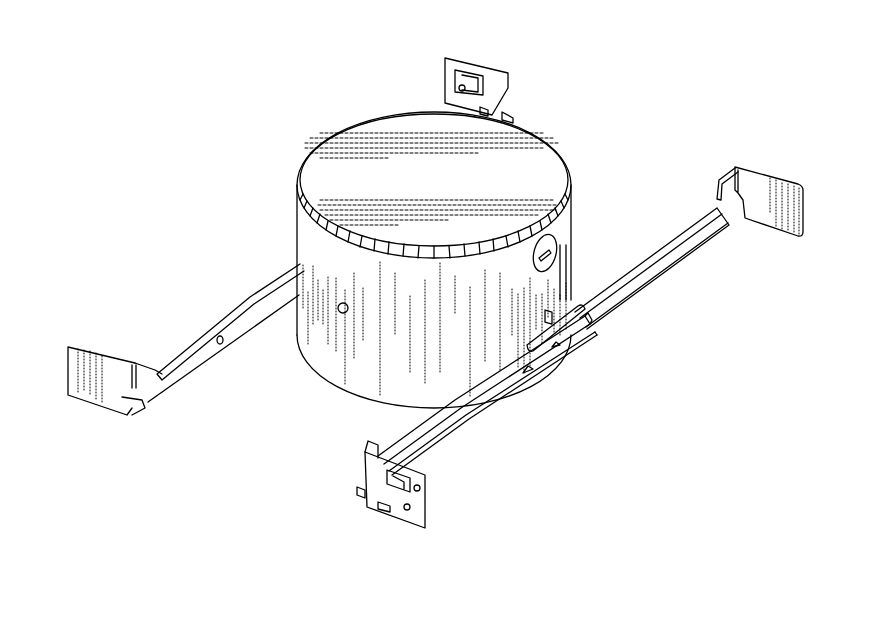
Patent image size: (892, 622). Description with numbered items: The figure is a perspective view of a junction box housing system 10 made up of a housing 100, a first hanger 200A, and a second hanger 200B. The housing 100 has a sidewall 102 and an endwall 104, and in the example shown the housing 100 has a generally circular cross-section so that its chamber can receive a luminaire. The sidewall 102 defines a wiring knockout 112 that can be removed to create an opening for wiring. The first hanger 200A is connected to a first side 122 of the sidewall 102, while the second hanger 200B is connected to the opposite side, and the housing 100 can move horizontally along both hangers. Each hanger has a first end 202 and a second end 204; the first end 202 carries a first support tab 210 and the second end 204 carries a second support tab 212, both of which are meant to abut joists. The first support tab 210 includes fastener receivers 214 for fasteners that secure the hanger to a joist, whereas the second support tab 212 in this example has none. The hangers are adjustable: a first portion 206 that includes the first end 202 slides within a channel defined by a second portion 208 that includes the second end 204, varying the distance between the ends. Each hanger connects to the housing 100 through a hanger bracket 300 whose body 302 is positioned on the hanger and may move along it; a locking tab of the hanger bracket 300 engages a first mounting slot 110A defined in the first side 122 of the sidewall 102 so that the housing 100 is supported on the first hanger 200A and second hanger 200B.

The junction box housing system 10 is at (198, 116).
The housing 100 is at (550, 143).
The sidewall 102 is at (575, 222).
The endwall 104 is at (330, 148).
The first mounting slot 110A is at (540, 316).
The wiring knockout 112 is at (545, 235).
The first side 122 is at (560, 283).
The first hanger 200A is at (442, 438).
The second hanger 200B is at (242, 314).
The first end 202 is at (470, 63).
The second end 204 is at (772, 240).
The first portion 206 is at (455, 80).
The second portion 208 is at (706, 214).
The first support tab 210 is at (510, 88).
The second support tab 212 is at (766, 173).
The fastener receiver 214 is at (472, 62).
The hanger bracket 300 is at (580, 327).
The body 302 is at (523, 373).